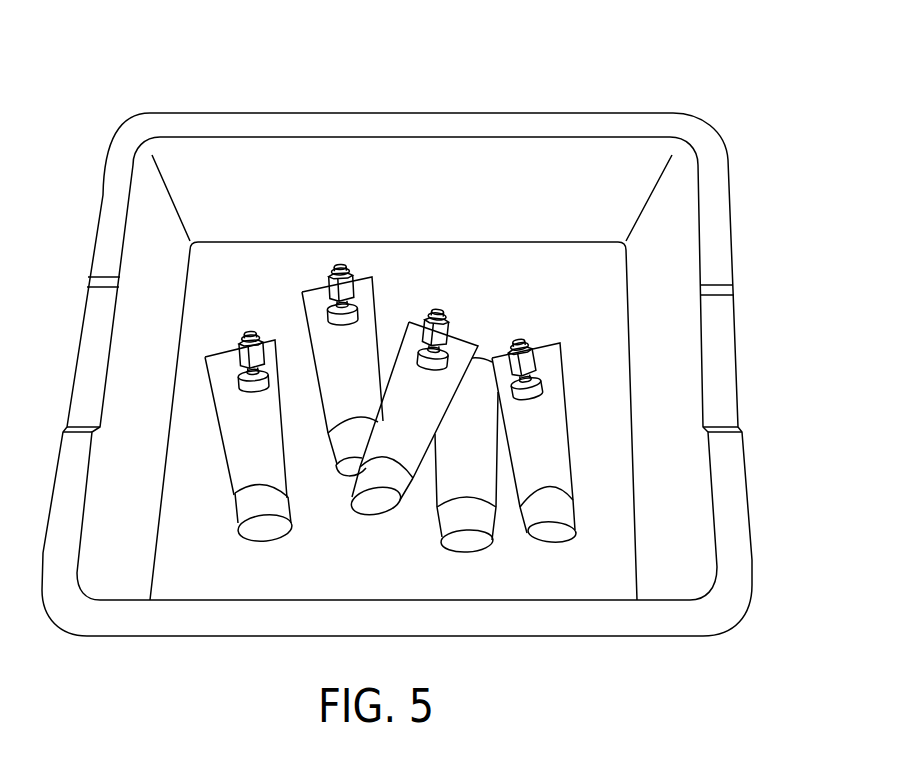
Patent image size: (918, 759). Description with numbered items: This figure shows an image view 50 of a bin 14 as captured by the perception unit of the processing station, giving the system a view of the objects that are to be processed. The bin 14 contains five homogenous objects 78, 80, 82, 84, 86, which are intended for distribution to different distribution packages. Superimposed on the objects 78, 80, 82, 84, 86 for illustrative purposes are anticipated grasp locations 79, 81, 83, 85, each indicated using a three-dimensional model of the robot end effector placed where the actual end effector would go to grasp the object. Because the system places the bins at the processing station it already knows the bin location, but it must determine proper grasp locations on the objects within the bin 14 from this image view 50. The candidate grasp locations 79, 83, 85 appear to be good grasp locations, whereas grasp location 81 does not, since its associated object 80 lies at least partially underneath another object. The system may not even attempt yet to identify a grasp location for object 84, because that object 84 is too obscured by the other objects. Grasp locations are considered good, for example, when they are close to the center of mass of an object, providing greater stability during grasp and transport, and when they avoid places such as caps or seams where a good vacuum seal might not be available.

The bin 14 is at (443, 112).
The image view 50 is at (706, 76).
The object 78 is at (243, 517).
The anticipated grasp location 79 is at (245, 328).
The object 80 is at (328, 437).
The anticipated grasp location 81 is at (337, 262).
The object 82 is at (398, 502).
The anticipated grasp location 83 is at (433, 307).
The object 84 is at (483, 520).
The anticipated grasp location 85 is at (510, 337).
The object 86 is at (563, 510).